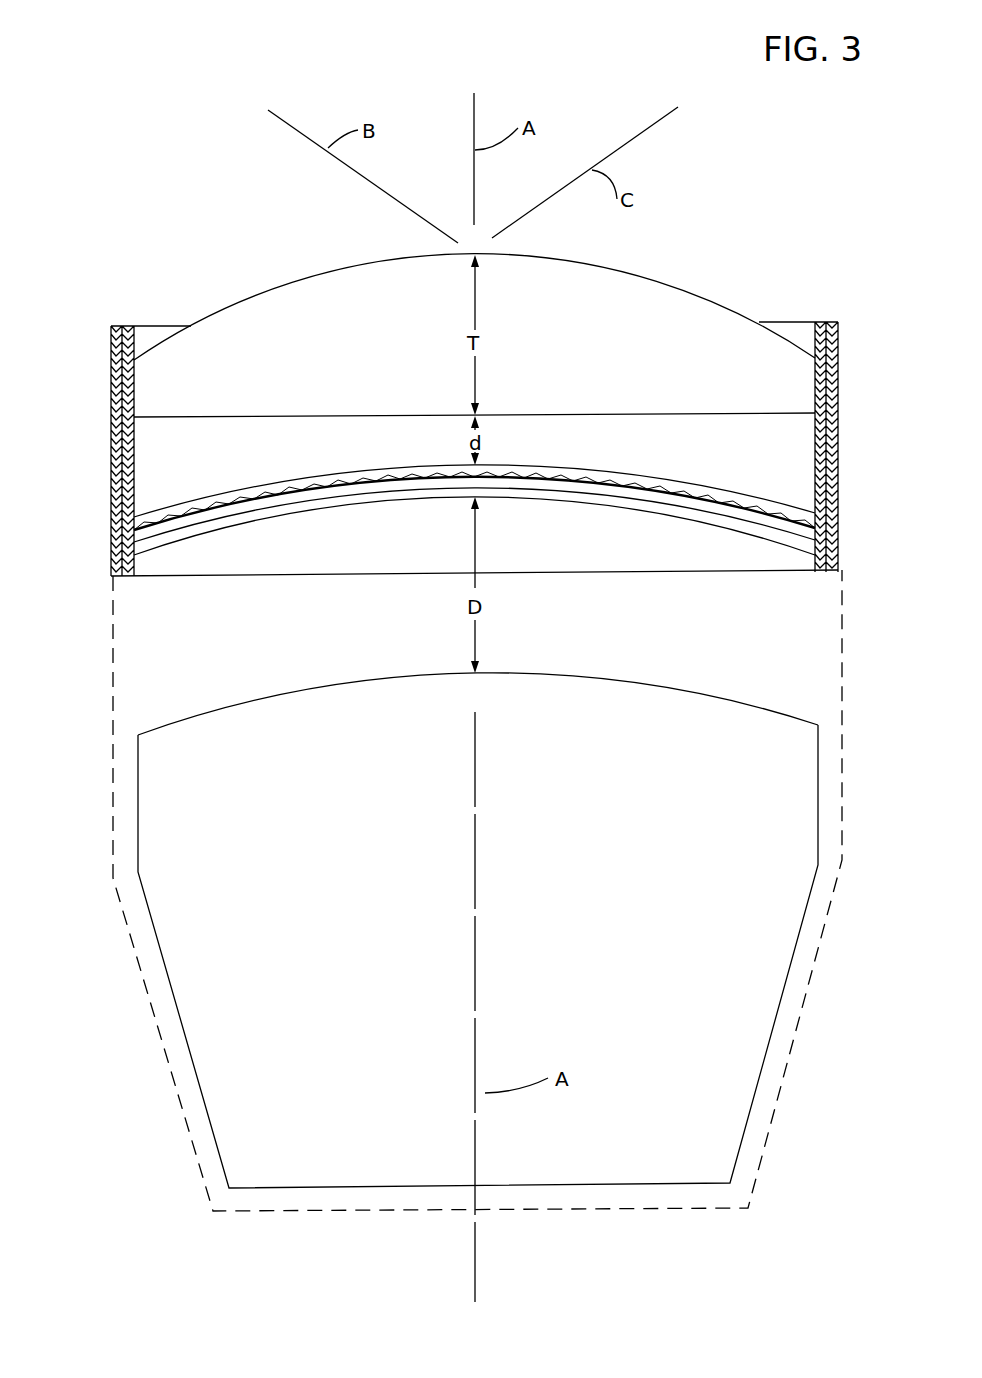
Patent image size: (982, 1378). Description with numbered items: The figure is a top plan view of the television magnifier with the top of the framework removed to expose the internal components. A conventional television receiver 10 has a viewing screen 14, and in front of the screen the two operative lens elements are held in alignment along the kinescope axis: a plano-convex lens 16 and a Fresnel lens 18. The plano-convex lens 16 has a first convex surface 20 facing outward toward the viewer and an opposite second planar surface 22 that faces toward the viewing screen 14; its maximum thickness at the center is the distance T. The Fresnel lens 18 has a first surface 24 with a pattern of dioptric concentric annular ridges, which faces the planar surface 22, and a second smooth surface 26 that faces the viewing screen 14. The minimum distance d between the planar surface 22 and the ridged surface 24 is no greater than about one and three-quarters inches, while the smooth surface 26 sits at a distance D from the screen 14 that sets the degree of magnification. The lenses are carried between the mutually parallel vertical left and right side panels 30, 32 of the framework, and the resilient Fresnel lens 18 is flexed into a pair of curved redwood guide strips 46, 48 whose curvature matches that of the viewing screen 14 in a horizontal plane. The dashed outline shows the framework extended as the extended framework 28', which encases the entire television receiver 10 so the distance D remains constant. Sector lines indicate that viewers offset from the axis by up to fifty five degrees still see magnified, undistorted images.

The television receiver 10 is at (438, 901).
The television receiver viewing screen 14 is at (308, 686).
The plano-convex lens 16 is at (687, 290).
The Fresnel lens 18 is at (685, 518).
The first convex surface 20 is at (305, 279).
The second planar surface 22 is at (737, 414).
The first surface 24 is at (474, 484).
The second smooth surface 26 is at (555, 492).
The extended framework 28' is at (447, 890).
The left side panel 30 is at (843, 385).
The right side panel 32 is at (110, 401).
The guide strip 46 is at (192, 530).
The guide strip 48 is at (208, 504).